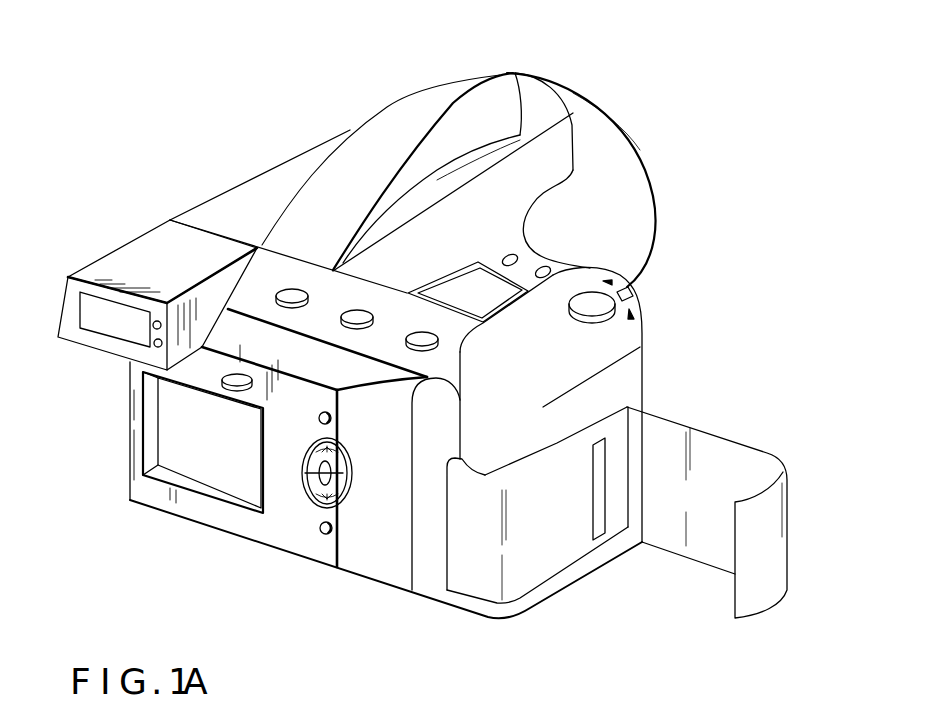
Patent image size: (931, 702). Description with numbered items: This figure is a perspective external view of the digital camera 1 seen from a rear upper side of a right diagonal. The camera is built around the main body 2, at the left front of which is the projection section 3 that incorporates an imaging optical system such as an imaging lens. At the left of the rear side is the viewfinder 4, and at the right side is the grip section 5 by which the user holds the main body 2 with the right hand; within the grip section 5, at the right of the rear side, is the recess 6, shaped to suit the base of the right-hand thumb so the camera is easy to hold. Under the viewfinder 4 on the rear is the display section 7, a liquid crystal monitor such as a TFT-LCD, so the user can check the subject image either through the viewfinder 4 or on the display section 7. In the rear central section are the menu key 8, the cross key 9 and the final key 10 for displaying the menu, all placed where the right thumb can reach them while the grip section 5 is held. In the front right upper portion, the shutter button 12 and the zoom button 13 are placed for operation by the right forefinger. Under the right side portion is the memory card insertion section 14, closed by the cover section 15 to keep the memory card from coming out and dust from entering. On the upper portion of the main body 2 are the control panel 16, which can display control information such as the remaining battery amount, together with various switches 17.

The digital camera 1 is at (712, 163).
The main body 2 is at (517, 76).
The projection section 3 is at (607, 123).
The viewfinder 4 is at (147, 242).
The grip section 5 is at (503, 413).
The recess 6 is at (352, 510).
The display section 7 is at (170, 430).
The menu key 8 is at (317, 421).
The cross key 9 is at (302, 490).
The final key 10 is at (313, 497).
The shutter button 12 is at (603, 327).
The zoom button 13 is at (636, 287).
The memory card insertion section 14 is at (600, 530).
The cover section 15 is at (773, 557).
The control panel 16 is at (485, 300).
The switches 17 is at (283, 289).